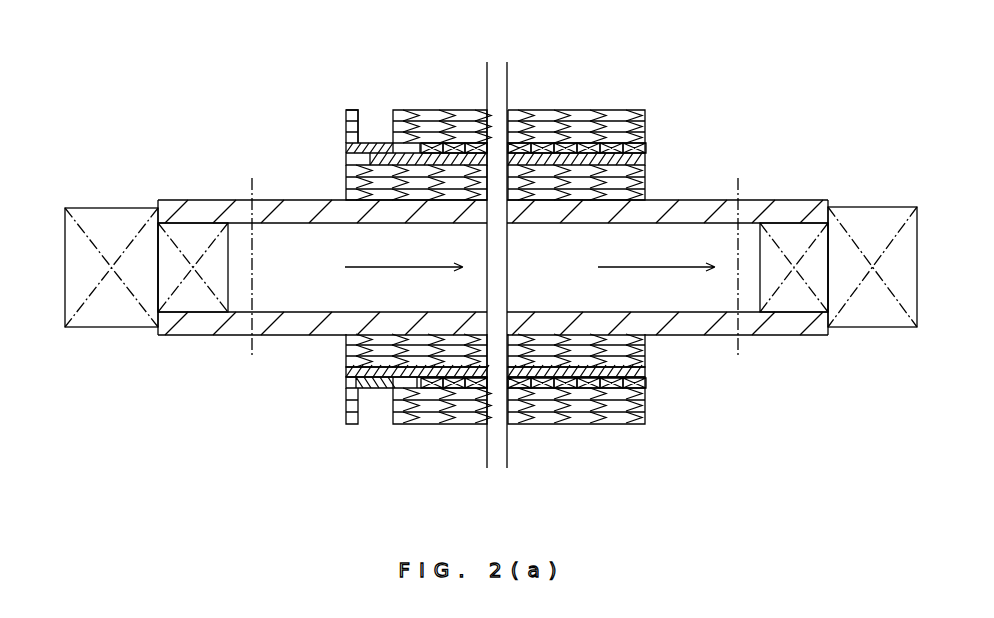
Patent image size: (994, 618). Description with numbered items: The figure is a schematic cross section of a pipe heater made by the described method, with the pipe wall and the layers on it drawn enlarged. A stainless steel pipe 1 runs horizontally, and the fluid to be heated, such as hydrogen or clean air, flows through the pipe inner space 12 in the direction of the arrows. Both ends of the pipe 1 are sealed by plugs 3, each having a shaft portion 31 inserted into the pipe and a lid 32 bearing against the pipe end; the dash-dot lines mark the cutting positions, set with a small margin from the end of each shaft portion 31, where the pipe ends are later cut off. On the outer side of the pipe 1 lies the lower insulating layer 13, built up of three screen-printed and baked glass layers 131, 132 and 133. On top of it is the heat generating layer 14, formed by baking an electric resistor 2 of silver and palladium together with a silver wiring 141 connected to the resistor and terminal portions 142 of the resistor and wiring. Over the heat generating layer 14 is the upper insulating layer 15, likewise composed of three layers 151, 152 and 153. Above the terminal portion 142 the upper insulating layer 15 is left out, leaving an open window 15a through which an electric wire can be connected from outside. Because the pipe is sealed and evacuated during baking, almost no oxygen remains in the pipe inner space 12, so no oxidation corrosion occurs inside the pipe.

The stainless steel pipe 1 is at (190, 323).
The electric resistor 2 is at (508, 269).
The plug 3 is at (492, 310).
The pipe inner space 12 is at (291, 279).
The lower insulating layer 13 is at (558, 151).
The first layer of lower insulating layer 131 is at (630, 197).
The second layer of lower insulating layer 132 is at (627, 181).
The third layer of lower insulating layer 133 is at (612, 172).
The heat generating layer 14 is at (503, 437).
The silver wiring 141 is at (620, 374).
The terminal portion 142 is at (373, 390).
The upper insulating layer 15 is at (504, 418).
The first layer of upper insulating layer 151 is at (627, 395).
The second layer of upper insulating layer 152 is at (603, 405).
The third layer of upper insulating layer 153 is at (580, 417).
The open window 15a is at (376, 127).
The shaft portion 31 is at (182, 301).
The lid 32 is at (101, 301).